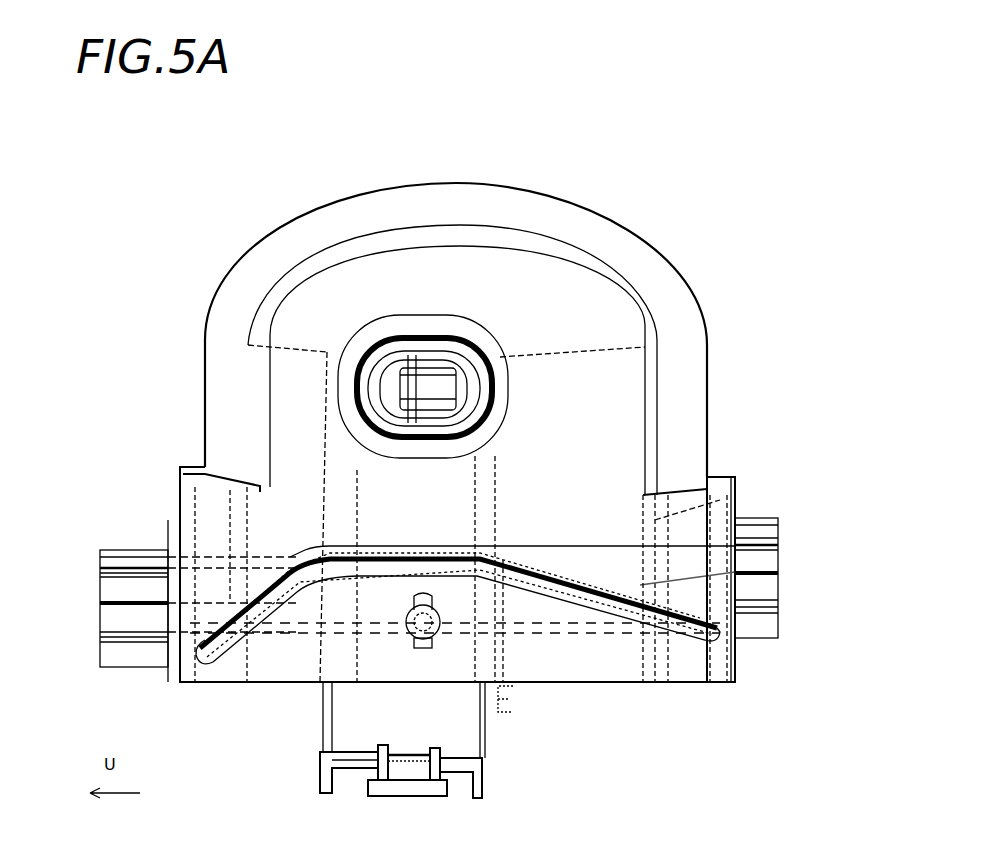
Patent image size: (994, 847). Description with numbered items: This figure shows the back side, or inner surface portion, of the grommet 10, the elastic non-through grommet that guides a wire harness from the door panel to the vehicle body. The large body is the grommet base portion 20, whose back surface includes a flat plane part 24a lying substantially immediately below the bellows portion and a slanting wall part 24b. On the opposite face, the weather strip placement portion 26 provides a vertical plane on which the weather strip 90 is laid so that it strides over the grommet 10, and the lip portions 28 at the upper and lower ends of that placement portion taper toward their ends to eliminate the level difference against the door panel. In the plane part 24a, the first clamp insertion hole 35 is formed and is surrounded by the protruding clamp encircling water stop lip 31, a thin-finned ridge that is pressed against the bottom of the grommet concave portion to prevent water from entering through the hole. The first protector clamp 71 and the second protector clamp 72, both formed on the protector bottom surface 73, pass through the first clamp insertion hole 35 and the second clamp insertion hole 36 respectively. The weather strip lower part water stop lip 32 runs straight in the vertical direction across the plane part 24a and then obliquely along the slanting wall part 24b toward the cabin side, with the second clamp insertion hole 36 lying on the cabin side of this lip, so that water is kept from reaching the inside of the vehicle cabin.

The grommet 10 is at (158, 243).
The grommet base portion 20 is at (657, 243).
The plane part 24a is at (382, 478).
The slanting wall part 24b is at (573, 295).
The weather strip placement portion 26 is at (737, 500).
The lip portions 28 is at (175, 522).
The clamp encircling water stop lip 31 is at (355, 330).
The weather strip lower part water stop lip 32 is at (270, 605).
The first clamp insertion hole 35 is at (450, 368).
The second clamp insertion hole 36 is at (443, 606).
The first protector clamp 71 is at (413, 372).
The second protector clamp 72 is at (443, 638).
The protector bottom surface 73 is at (360, 737).
The weather strip 90 is at (758, 540).